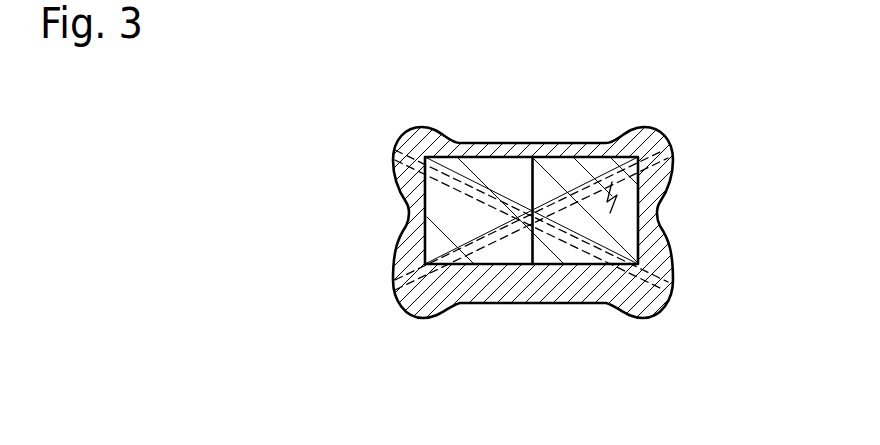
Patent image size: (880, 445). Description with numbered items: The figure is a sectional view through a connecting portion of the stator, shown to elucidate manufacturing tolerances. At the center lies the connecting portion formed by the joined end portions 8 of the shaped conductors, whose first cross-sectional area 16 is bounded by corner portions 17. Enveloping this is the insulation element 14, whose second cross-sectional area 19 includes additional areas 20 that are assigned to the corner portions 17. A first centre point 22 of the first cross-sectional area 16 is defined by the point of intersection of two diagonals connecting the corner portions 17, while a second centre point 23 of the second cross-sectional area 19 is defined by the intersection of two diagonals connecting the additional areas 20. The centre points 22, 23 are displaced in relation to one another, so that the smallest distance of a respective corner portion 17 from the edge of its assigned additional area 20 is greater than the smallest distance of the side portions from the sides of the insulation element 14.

The end portion 8 is at (482, 265).
The insulation element 14 is at (673, 173).
The first cross-sectional area 16 is at (640, 197).
The corner portion 17 is at (402, 155).
The second cross-sectional area 19 is at (650, 263).
The additional area 20 is at (412, 130).
The first centre point 22 is at (532, 208).
The second centre point 23 is at (533, 226).